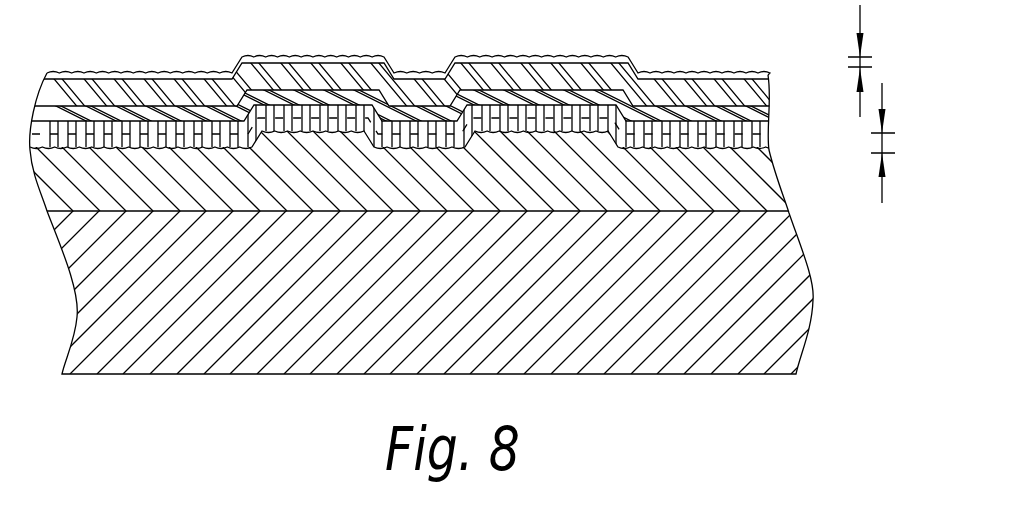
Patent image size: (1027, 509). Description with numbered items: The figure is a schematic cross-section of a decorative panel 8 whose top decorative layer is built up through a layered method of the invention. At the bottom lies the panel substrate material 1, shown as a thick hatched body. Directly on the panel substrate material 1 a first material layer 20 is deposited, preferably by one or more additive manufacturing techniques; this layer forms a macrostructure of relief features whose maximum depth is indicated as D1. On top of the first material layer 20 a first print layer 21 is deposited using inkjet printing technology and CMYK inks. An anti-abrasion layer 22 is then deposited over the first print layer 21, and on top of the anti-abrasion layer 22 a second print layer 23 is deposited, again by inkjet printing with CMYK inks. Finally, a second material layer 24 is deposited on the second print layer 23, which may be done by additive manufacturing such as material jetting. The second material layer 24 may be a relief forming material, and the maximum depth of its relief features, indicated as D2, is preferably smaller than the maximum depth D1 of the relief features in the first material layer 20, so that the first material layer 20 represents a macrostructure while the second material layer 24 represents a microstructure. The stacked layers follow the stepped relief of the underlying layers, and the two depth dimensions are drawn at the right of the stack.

The decorative panel 8 is at (150, 46).
The panel substrate material 1 is at (737, 316).
The first material layer 20 is at (703, 200).
The first print layer 21 is at (722, 137).
The anti-abrasion layer 22 is at (743, 110).
The second print layer 23 is at (740, 92).
The second material layer 24 is at (712, 78).
The maximum depth of the relief features in the first material layer D1 is at (882, 193).
The maximum depth of the relief features in the second material layer D2 is at (860, 10).